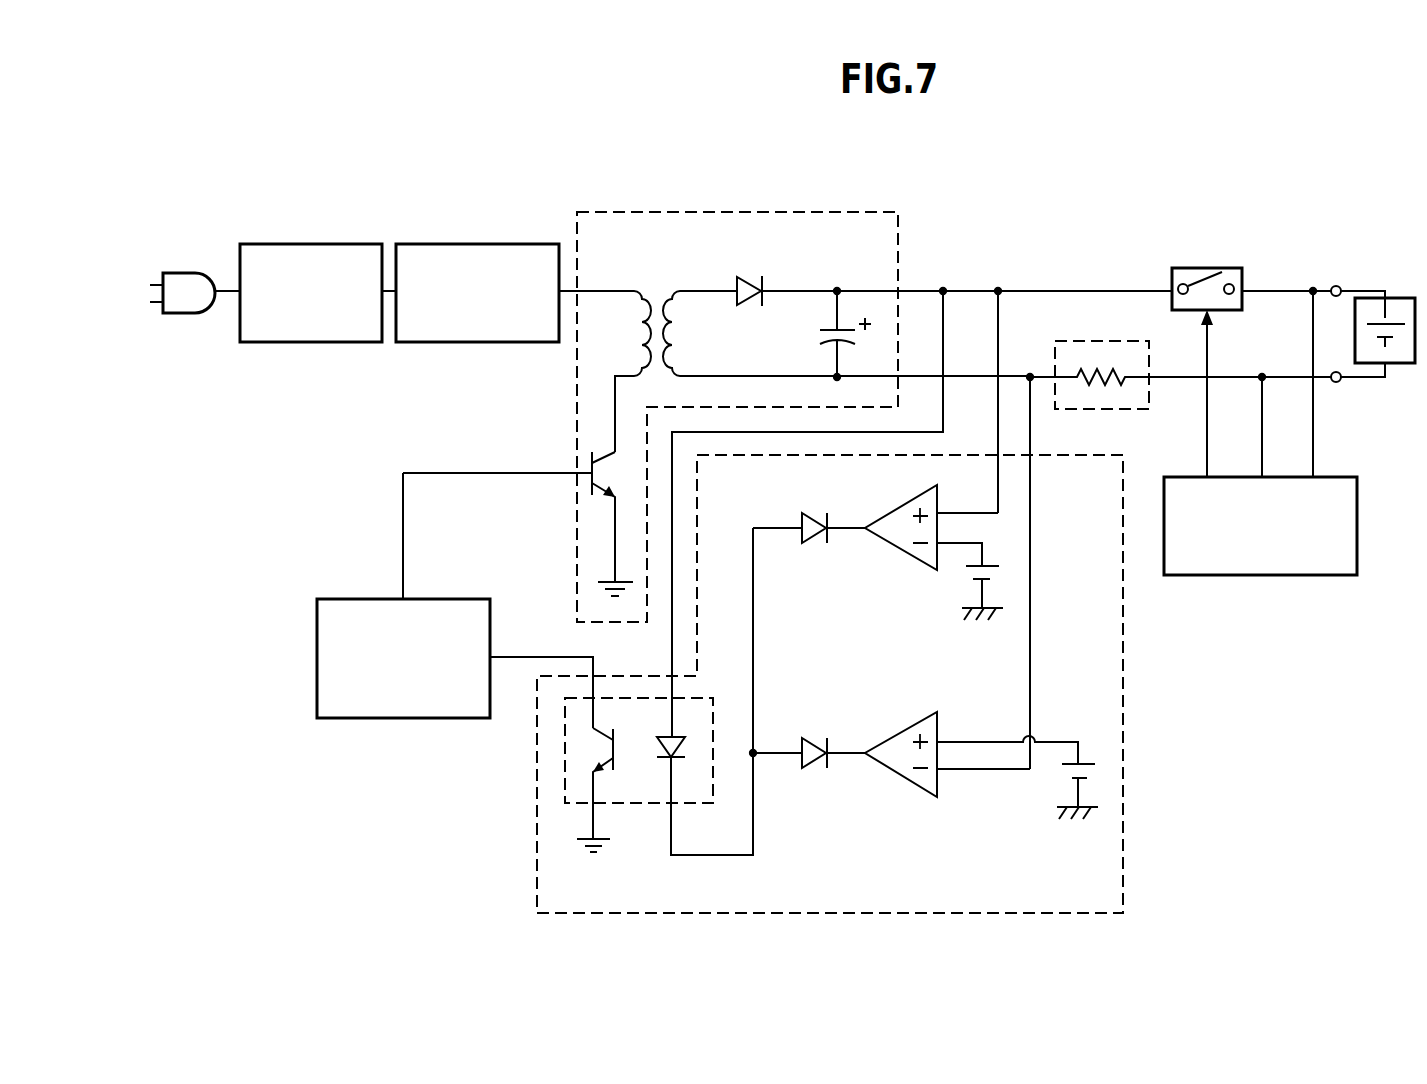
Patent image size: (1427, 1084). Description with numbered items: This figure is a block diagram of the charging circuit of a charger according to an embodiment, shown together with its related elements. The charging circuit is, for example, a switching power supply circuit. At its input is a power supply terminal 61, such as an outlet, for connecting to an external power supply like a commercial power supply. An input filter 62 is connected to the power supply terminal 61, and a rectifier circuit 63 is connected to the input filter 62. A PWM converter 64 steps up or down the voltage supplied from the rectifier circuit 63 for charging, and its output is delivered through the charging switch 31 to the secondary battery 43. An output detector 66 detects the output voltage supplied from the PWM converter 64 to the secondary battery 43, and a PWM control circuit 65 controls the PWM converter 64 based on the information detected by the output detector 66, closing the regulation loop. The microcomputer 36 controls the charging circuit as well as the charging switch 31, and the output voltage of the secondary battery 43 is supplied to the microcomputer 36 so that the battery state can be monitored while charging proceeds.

The power supply terminal 61 is at (184, 273).
The input filter 62 is at (312, 244).
The rectifier circuit 63 is at (478, 244).
The PWM converter 64 is at (638, 212).
The PWM control circuit 65 is at (359, 599).
The output detector 66 is at (537, 846).
The charging switch 31 is at (1226, 268).
The secondary battery 43 is at (1400, 298).
The microcomputer 36 is at (1294, 577).